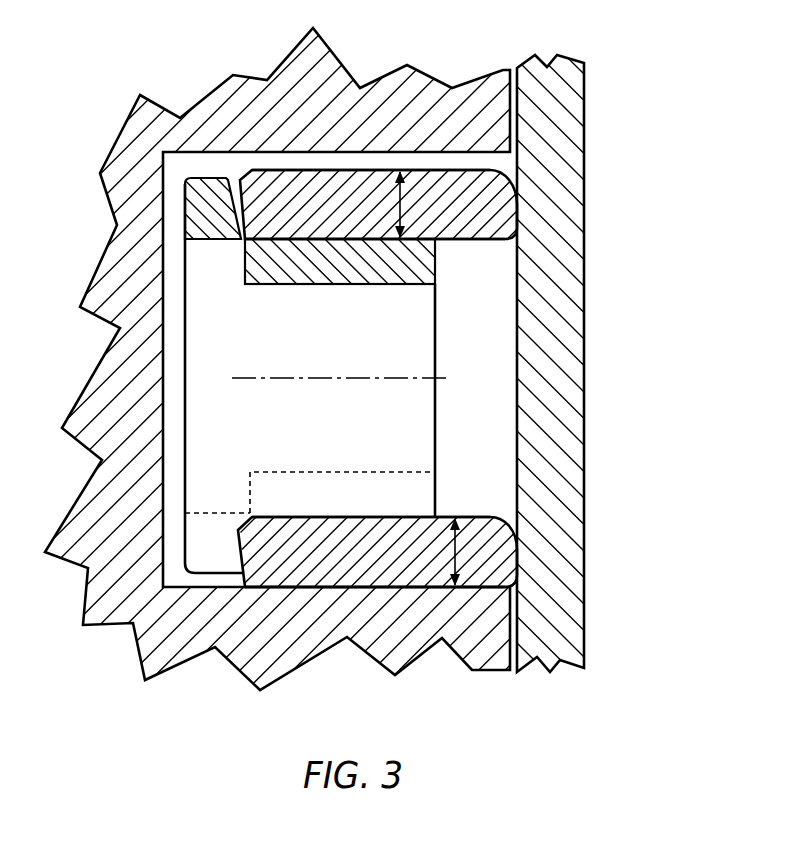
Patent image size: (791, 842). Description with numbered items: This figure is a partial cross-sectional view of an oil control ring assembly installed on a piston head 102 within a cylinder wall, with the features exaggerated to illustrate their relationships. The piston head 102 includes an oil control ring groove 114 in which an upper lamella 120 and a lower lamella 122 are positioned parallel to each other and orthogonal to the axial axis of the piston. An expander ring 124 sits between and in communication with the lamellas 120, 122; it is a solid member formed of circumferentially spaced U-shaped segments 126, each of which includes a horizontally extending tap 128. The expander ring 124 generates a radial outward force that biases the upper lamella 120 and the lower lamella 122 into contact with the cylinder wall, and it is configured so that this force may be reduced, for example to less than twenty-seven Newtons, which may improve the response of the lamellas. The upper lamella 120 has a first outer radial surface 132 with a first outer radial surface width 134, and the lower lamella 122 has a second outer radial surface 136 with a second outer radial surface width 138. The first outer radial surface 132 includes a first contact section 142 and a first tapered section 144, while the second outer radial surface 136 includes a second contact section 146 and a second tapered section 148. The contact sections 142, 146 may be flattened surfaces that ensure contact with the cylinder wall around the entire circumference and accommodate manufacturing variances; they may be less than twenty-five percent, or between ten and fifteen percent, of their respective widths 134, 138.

The piston head 102 is at (487, 107).
The oil control ring groove 114 is at (163, 265).
The upper lamella 120 is at (451, 161).
The lower lamella 122 is at (454, 578).
The expander ring 124 is at (316, 378).
The U-shaped segments 126 is at (297, 265).
The horizontally extending tap 128 is at (222, 226).
The first outer radial surface 132 is at (516, 194).
The first outer radial surface width 134 is at (409, 190).
The second outer radial surface 136 is at (518, 548).
The second outer radial surface width 138 is at (457, 541).
The first contact section 142 is at (517, 222).
The first tapered section 144 is at (502, 175).
The second contact section 146 is at (518, 572).
The second tapered section 148 is at (502, 523).